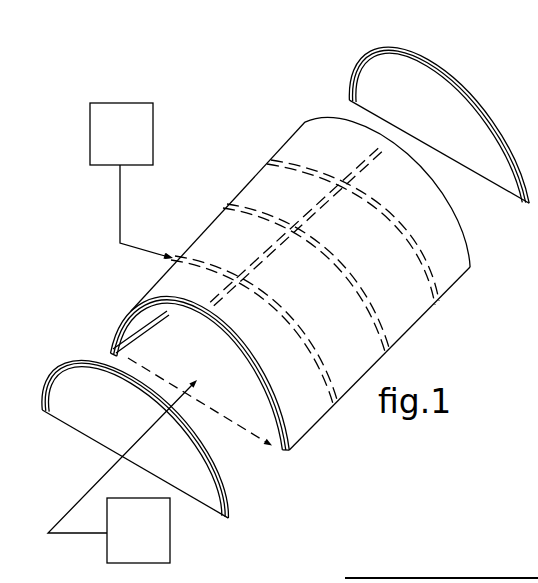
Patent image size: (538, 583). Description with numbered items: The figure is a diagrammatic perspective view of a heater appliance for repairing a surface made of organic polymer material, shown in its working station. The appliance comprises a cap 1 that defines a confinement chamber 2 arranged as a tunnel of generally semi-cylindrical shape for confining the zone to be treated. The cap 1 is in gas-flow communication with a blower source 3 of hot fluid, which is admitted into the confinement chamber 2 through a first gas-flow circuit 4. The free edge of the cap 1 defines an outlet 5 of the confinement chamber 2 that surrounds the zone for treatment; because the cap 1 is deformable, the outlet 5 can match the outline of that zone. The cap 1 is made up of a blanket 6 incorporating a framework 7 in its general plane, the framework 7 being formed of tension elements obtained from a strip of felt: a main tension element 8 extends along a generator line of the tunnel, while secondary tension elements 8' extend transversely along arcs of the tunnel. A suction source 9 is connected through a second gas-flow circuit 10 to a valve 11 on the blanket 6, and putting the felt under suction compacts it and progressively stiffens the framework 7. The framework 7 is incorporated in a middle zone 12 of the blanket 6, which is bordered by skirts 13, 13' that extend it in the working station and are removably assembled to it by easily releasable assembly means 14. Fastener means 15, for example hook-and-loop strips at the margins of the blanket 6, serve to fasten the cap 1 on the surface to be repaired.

The cap 1 is at (260, 136).
The confinement chamber 2 is at (196, 347).
The blower source 3 is at (144, 540).
The first gas-flow circuit 4 is at (97, 483).
The outlet 5 is at (248, 432).
The blanket 6 is at (252, 179).
The framework 7 is at (341, 228).
The main tension element 8 is at (296, 227).
The secondary tension element 8' is at (353, 232).
The suction source 9 is at (128, 145).
The second gas-flow circuit 10 is at (120, 205).
The valve 11 is at (172, 252).
The middle zone 12 is at (337, 147).
The skirt 13 is at (135, 439).
The skirt 13' is at (439, 151).
The releasable assembly means 14 is at (250, 366).
The fastener means 15 is at (110, 352).